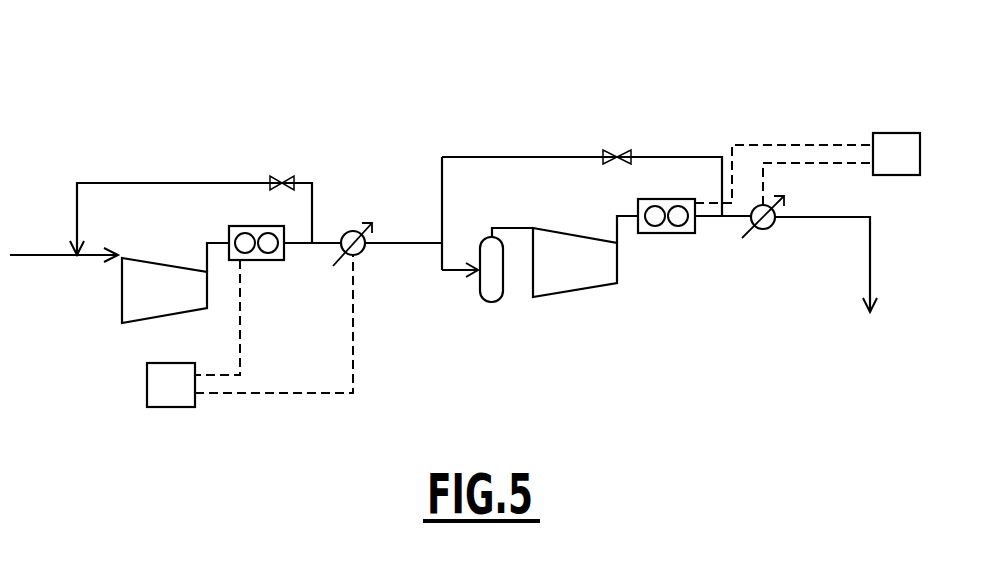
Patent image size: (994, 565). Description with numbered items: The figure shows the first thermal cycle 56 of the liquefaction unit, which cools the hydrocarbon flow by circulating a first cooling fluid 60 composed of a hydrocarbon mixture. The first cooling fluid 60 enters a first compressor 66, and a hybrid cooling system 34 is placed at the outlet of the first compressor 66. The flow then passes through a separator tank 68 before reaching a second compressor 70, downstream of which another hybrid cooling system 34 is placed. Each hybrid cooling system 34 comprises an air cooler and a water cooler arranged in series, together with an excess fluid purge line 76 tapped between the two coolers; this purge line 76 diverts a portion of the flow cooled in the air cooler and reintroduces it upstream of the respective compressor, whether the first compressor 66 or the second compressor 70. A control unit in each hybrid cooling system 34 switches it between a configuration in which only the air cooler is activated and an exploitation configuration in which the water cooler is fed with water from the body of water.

The hybrid cooling system 34 is at (410, 348).
The first thermal cycle 56 is at (914, 93).
The first cooling fluid 60 is at (26, 255).
The first compressor 66 is at (113, 294).
The separator tank 68 is at (492, 293).
The second compressor 70 is at (600, 272).
The excess fluid purge line 76 is at (563, 157).